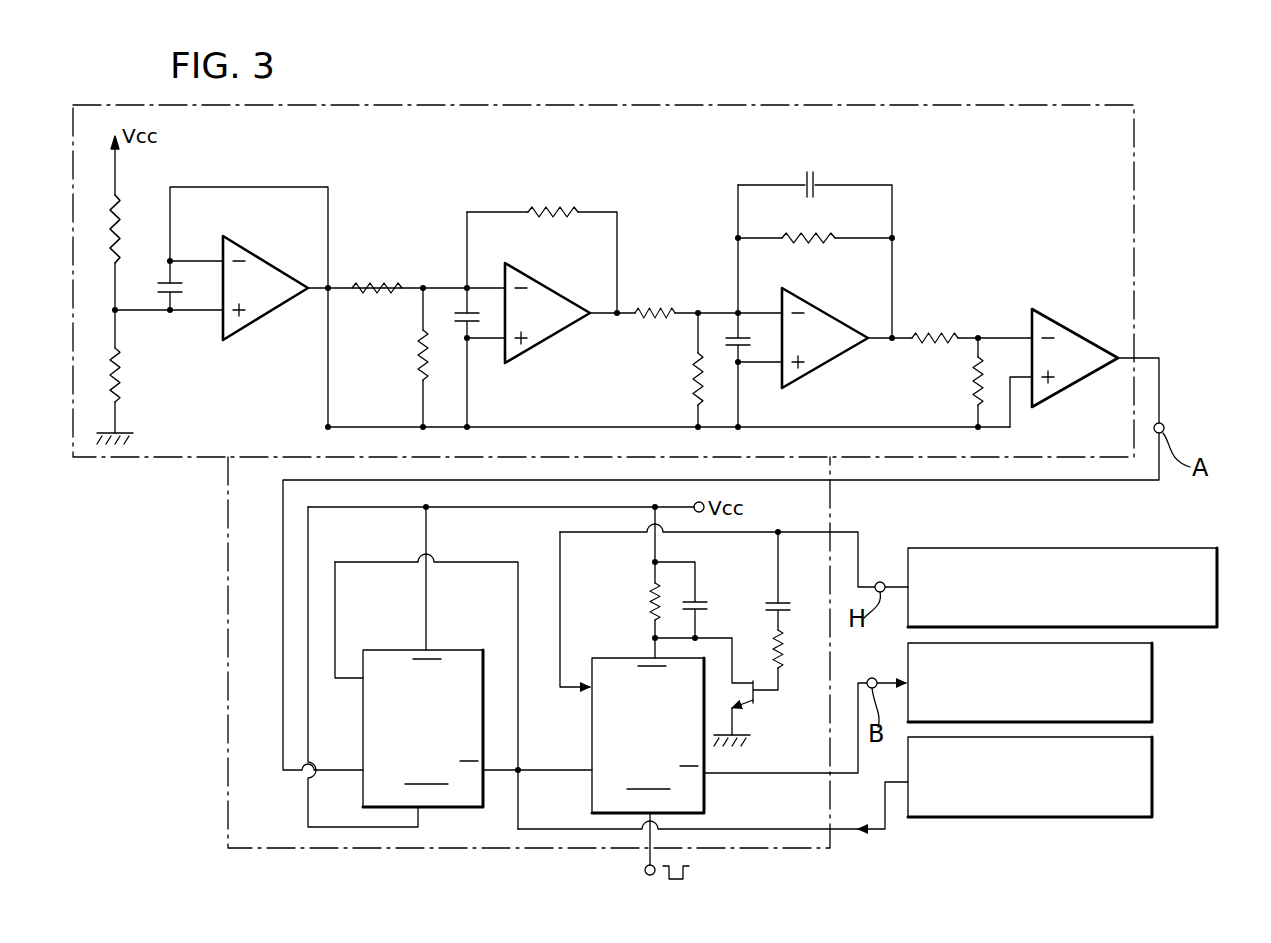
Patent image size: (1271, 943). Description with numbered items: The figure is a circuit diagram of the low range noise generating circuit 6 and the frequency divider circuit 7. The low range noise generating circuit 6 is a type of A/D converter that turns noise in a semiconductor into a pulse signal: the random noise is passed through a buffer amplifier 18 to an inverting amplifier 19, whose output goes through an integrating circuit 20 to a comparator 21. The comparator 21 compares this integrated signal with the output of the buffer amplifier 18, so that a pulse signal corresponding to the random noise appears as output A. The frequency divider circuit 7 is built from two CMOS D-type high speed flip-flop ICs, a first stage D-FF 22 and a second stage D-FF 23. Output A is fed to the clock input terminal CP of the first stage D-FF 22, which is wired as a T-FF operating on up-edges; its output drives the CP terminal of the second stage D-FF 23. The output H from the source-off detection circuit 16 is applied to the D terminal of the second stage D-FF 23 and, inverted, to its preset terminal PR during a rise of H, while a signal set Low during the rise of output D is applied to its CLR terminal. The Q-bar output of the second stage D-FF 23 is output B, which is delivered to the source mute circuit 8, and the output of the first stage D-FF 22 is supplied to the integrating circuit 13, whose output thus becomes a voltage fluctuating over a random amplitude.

The low range noise generating circuit 6 is at (1136, 271).
The frequency divider circuit 7 is at (228, 620).
The source mute circuit 8 is at (1154, 688).
The integrating circuit 13 is at (1154, 786).
The source-off detection circuit 16 is at (1117, 548).
The buffer amplifier 18 is at (343, 205).
The inverting amplifier 19 is at (577, 185).
The integrating circuit 20 is at (906, 240).
The comparator 21 is at (1053, 291).
The first stage D-FF 22 is at (455, 650).
The second stage D-FF 23 is at (592, 726).